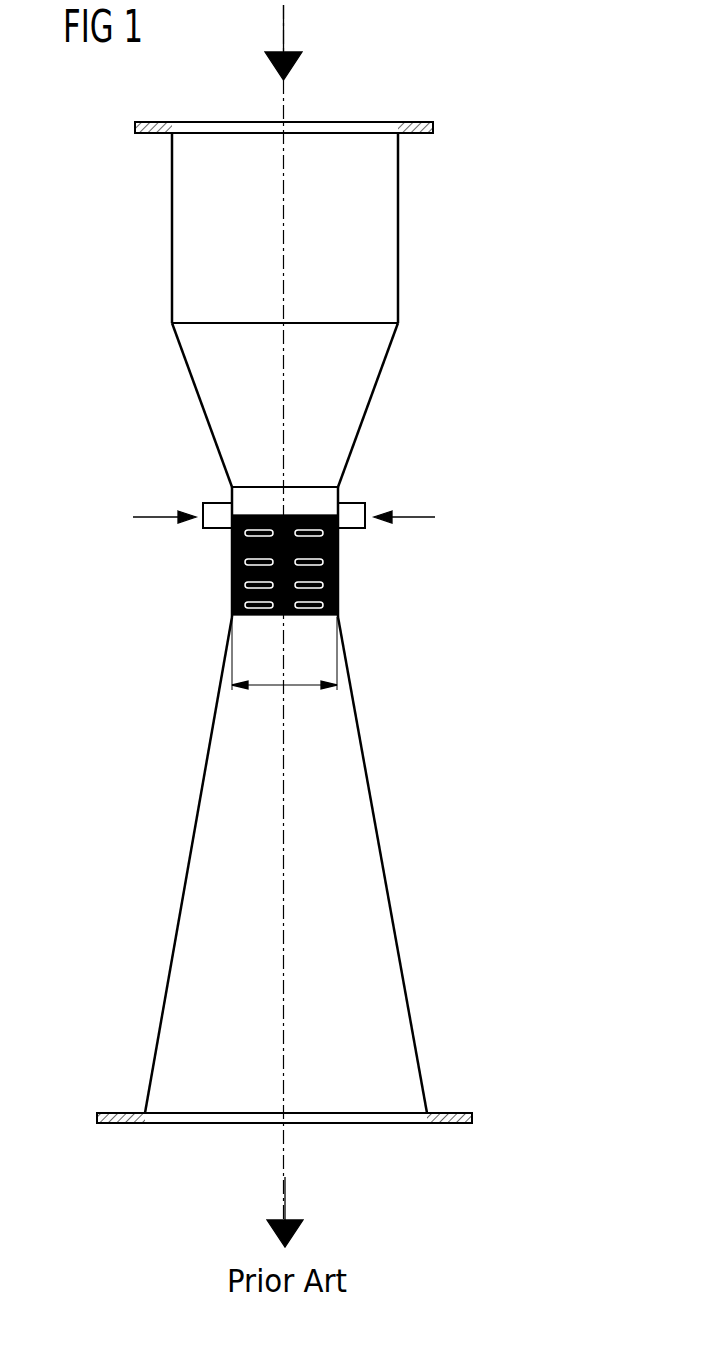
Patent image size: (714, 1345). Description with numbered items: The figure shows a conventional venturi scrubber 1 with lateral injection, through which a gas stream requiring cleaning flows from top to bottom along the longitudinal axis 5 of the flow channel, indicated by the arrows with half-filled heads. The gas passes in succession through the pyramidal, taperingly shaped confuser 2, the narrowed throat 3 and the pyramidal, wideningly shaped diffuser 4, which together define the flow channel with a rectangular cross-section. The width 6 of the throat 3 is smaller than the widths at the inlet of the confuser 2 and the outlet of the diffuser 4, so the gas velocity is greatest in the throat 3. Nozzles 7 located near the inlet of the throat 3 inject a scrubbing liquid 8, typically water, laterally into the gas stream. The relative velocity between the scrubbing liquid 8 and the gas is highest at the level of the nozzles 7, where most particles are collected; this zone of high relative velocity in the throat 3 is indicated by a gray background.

The venturi scrubber 1 is at (473, 205).
The confuser 2 is at (80, 322).
The throat 3 is at (455, 486).
The diffuser 4 is at (88, 616).
The longitudinal axis 5 is at (286, 106).
The width of the throat 6 is at (297, 686).
The nozzles 7 is at (217, 520).
The scrubbing liquid 8 is at (155, 513).